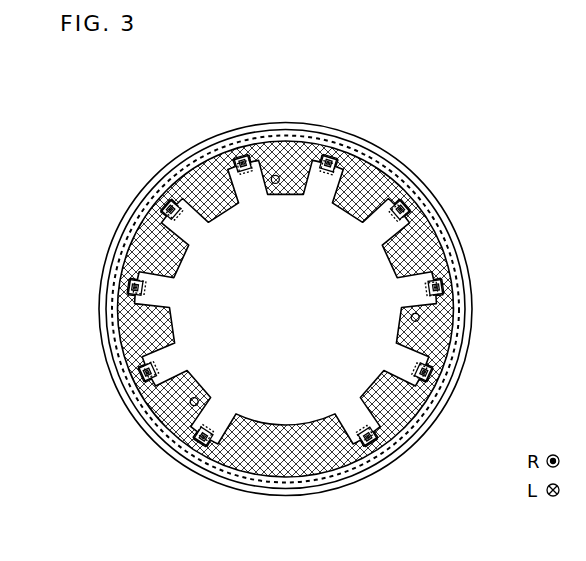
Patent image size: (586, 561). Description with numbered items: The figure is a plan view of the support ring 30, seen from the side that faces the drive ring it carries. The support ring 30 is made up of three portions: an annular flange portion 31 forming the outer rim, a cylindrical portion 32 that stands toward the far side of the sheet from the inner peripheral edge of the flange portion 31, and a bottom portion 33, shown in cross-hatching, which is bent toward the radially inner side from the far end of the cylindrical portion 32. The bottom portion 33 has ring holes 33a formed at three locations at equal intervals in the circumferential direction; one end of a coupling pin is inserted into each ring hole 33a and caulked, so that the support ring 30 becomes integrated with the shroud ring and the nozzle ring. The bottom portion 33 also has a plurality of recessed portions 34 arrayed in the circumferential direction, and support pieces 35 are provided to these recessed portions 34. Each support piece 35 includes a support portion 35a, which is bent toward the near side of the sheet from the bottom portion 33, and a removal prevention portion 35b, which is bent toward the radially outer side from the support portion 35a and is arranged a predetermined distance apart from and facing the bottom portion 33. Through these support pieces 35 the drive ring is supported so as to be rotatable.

The support ring 30 is at (371, 134).
The flange portion 31 is at (417, 173).
The cylindrical portion 32 is at (433, 212).
The bottom portion 33 is at (422, 238).
The ring hole 33a is at (275, 175).
The recessed portion 34 is at (198, 160).
The support piece 35 is at (129, 284).
The support portion 35a is at (128, 290).
The removal prevention portion 35b is at (127, 285).